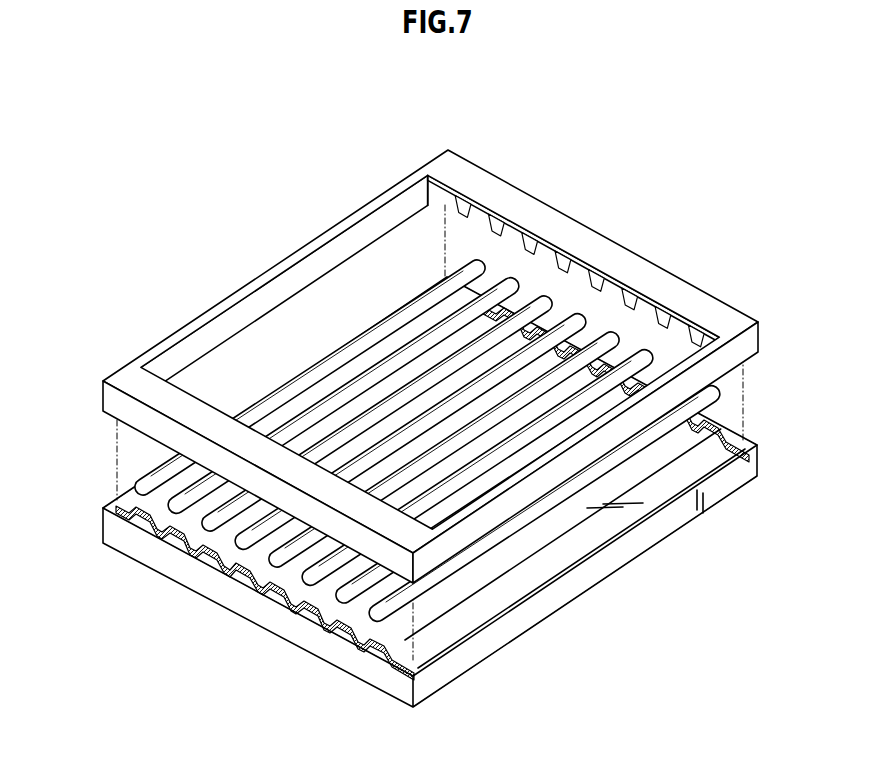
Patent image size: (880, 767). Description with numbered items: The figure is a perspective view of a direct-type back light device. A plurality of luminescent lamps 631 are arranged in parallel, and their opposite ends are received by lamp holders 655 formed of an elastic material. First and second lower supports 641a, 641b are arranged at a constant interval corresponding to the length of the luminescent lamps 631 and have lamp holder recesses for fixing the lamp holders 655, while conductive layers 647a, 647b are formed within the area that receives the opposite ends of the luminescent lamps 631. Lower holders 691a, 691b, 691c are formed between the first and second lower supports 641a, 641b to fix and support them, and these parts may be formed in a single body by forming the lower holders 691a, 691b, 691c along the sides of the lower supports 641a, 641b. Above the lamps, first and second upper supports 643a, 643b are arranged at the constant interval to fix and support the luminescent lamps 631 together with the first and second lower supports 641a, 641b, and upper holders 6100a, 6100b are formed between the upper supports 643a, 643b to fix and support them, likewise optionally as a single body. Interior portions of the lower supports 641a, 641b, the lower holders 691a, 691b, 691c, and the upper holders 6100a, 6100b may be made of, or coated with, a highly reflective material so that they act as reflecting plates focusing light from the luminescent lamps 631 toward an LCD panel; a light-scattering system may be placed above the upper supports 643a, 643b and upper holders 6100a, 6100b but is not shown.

The upper holder 6100a is at (430, 366).
The upper holder 6100b is at (432, 463).
The luminescent lamp 631 is at (350, 352).
The first upper support 643a is at (220, 420).
The second upper support 643b is at (573, 230).
The first lower support 641a is at (232, 627).
The second lower support 641b is at (733, 428).
The conductive layer 647a is at (372, 703).
The conductive layer 647b is at (748, 443).
The lamp holder 655 is at (692, 310).
The lower holder 691a is at (603, 597).
The lower holder 691b is at (122, 498).
The lower holder 691c is at (541, 642).